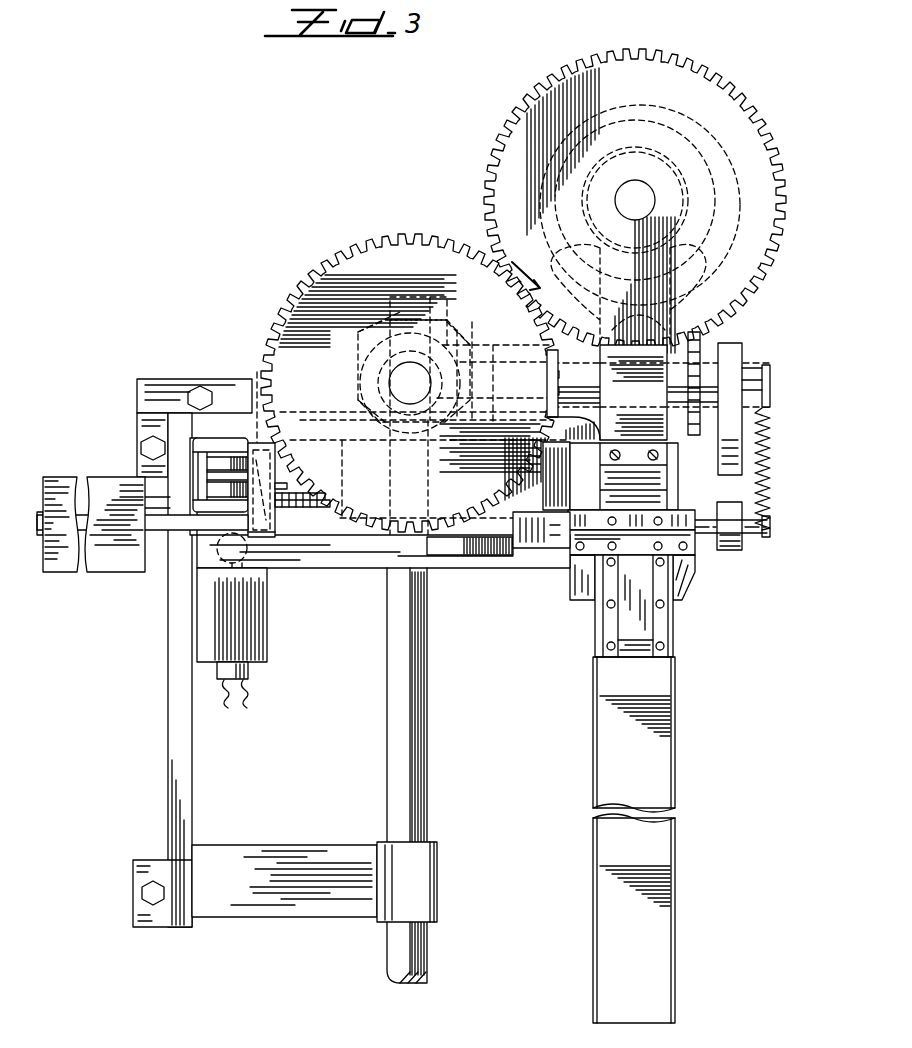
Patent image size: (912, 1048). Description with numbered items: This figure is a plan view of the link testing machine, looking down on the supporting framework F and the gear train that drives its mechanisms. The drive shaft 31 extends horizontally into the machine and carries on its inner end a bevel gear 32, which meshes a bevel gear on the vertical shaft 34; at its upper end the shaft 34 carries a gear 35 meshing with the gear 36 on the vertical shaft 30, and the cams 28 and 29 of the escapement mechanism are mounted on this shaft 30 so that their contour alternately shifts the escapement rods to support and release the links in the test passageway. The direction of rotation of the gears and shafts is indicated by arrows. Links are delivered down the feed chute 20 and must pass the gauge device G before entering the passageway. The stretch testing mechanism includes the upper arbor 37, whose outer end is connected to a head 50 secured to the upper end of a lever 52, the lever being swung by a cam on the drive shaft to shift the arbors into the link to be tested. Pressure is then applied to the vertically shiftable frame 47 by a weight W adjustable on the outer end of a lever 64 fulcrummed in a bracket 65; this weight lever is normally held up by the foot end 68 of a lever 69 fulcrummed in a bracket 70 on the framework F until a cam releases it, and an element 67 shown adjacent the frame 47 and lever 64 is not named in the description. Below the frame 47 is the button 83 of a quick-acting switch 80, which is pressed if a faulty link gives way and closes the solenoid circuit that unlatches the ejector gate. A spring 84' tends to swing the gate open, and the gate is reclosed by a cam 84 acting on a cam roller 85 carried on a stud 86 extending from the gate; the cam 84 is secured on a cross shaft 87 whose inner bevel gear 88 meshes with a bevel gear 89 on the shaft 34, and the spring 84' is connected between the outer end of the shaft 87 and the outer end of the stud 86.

The feed chute 20 is at (655, 764).
The cam 28 is at (702, 224).
The cam 29 is at (700, 258).
The vertical shaft 30 is at (640, 200).
The drive shaft 31 is at (396, 762).
The bevel gear 32 is at (447, 308).
The vertical shaft 34 is at (402, 384).
The gear 35 is at (414, 242).
The gear 36 is at (503, 160).
The upper arbor 37 is at (298, 507).
The frame 47 is at (362, 569).
The head 50 is at (257, 372).
The lever 52 is at (214, 500).
The lever 64 is at (166, 531).
The bracket 65 is at (546, 549).
The feed screw 67 is at (462, 557).
The foot end 68 is at (262, 537).
The lever 69 is at (228, 442).
The bracket 70 is at (193, 456).
The quick-acting switch 80 is at (268, 633).
The button 83 is at (240, 563).
The cam 84 is at (713, 409).
The spring 84' is at (780, 469).
The cam roller 85 is at (727, 552).
The stud 86 is at (748, 533).
The cross shaft 87 is at (752, 372).
The bevel gear 88 is at (462, 340).
The bevel gear 89 is at (370, 372).
The supporting framework F is at (178, 722).
The gauge device G is at (672, 588).
The weight W is at (122, 572).